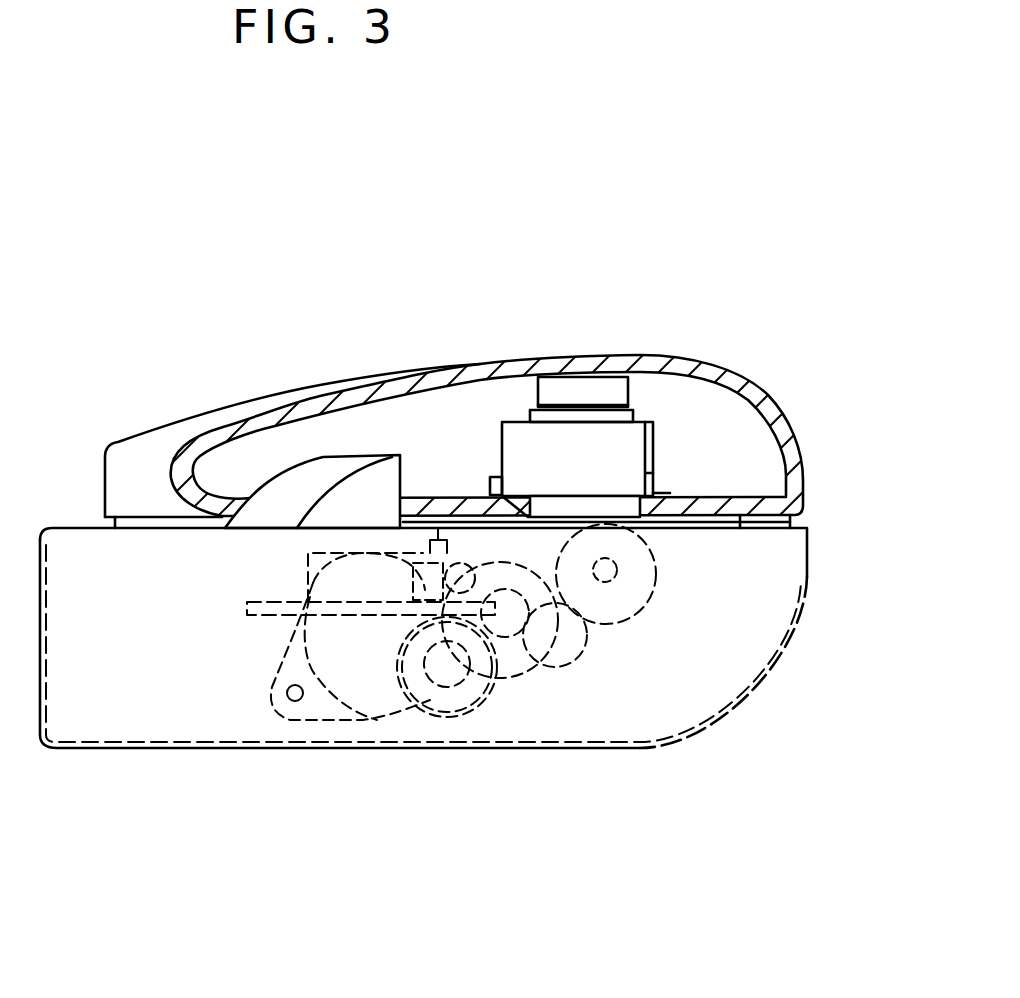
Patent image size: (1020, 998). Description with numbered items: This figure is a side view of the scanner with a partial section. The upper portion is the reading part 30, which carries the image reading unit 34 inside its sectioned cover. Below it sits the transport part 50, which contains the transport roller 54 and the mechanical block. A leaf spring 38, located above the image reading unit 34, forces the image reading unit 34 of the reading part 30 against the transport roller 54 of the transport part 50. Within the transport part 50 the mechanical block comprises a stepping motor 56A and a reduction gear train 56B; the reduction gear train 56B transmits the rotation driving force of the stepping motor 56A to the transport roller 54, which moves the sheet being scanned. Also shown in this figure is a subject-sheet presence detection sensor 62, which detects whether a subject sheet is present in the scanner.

The reading part 30 is at (717, 176).
The leaf spring 38 is at (620, 393).
The image reading unit 34 is at (630, 453).
The transport part 50 is at (608, 838).
The transport roller 54 is at (640, 600).
The stepping motor 56A is at (410, 717).
The reduction gear train 56B is at (530, 682).
The subject-sheet presence detection sensor 62 is at (440, 540).